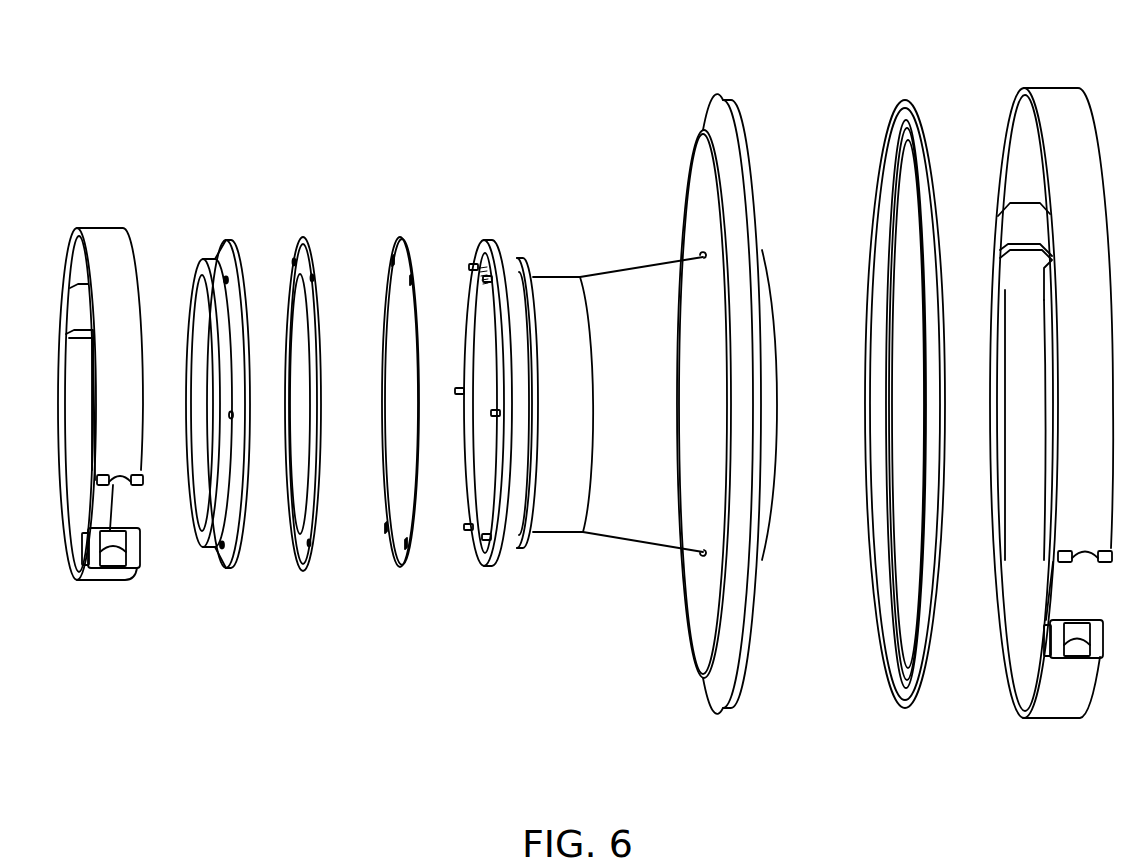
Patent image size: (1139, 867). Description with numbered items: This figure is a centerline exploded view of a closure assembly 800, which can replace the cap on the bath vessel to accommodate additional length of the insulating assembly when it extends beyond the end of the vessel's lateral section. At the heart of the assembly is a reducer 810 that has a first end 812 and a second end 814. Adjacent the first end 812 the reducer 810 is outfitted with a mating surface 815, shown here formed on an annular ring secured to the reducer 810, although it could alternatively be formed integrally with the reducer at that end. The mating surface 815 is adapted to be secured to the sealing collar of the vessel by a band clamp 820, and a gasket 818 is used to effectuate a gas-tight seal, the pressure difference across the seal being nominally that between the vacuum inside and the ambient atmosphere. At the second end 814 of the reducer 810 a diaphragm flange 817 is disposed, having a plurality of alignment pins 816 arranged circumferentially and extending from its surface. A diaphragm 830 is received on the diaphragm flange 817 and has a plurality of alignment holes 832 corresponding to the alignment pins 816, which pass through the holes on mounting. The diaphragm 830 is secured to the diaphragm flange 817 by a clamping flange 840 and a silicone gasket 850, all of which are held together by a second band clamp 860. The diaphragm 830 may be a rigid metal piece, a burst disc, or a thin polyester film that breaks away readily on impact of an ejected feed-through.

The closure assembly 800 is at (1080, 738).
The reducer 810 is at (618, 277).
The first end 812 is at (772, 282).
The second end 814 is at (478, 389).
The mating surface 815 is at (745, 686).
The alignment pins 816 is at (458, 393).
The diaphragm flange 817 is at (495, 563).
The gasket 818 is at (917, 686).
The band clamp 820 is at (1055, 93).
The diaphragm 830 is at (372, 406).
The alignment holes 832 is at (388, 533).
The clamping flange 840 is at (218, 252).
The silicone gasket 850 is at (300, 247).
The second band clamp 860 is at (96, 232).